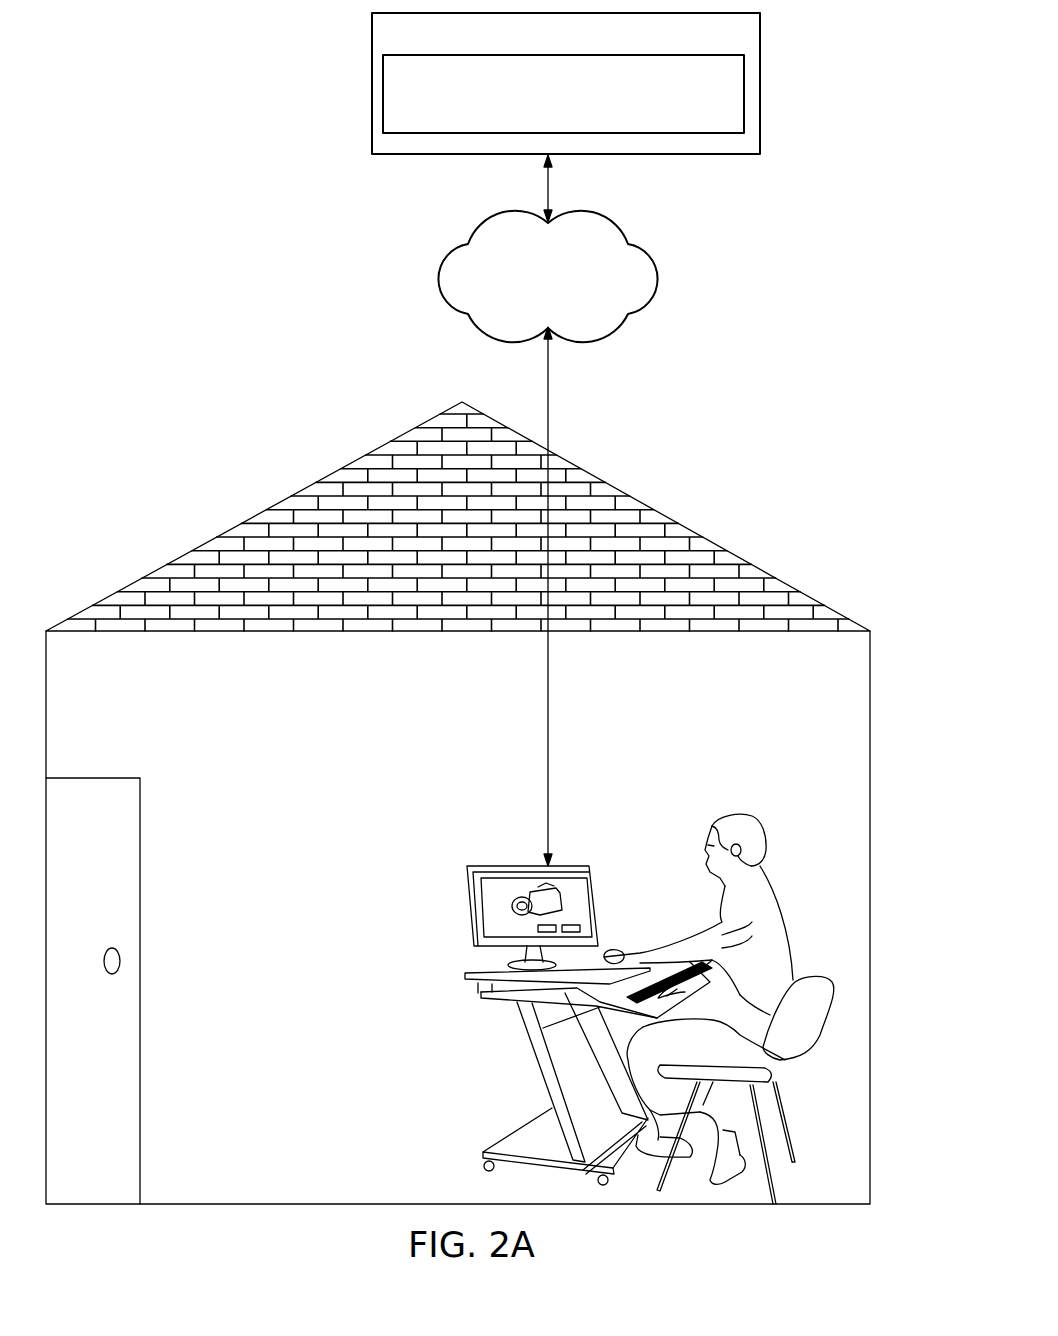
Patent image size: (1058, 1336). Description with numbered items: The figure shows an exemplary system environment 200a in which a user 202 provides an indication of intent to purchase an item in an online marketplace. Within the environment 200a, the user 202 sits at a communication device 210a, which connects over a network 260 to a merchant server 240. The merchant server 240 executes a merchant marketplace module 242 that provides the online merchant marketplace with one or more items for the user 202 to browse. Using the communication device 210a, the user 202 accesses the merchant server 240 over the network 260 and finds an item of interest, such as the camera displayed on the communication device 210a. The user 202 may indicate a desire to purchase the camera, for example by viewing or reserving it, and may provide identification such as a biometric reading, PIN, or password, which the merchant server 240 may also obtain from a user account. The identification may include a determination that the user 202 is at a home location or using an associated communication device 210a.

The environment 200a is at (878, 73).
The merchant server 240 is at (682, 46).
The merchant marketplace module 242 is at (442, 117).
The network 260 is at (573, 291).
The communication device 210a is at (485, 866).
The user 202 is at (730, 818).